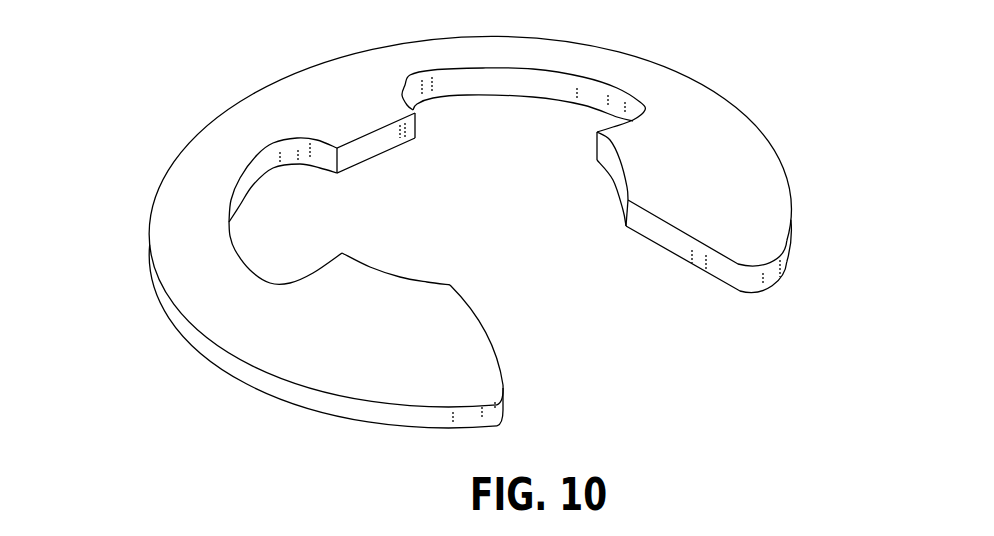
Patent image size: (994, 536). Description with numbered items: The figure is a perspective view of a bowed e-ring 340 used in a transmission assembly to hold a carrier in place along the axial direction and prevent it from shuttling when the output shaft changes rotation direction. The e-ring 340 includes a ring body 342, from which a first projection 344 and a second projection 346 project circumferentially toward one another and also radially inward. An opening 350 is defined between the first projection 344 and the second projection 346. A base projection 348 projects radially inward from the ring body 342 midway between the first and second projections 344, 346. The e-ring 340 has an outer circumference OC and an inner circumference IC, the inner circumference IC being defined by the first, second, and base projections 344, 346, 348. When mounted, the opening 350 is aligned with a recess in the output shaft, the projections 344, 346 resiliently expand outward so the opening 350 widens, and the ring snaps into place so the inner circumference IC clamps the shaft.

The e-ring 340 is at (183, 120).
The ring body 342 is at (183, 247).
The first projection 344 is at (383, 320).
The second projection 346 is at (762, 217).
The base projection 348 is at (348, 117).
The opening 350 is at (603, 330).
The outer circumference OC is at (672, 67).
The inner circumference IC is at (613, 172).